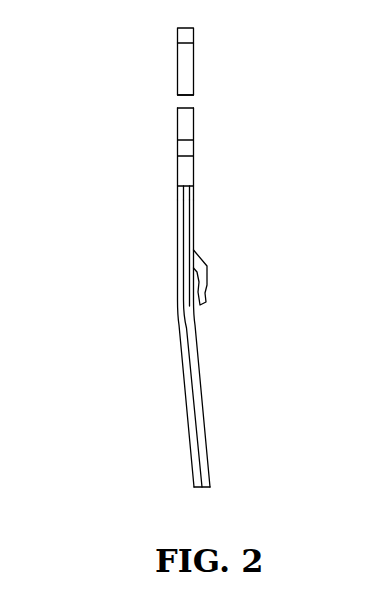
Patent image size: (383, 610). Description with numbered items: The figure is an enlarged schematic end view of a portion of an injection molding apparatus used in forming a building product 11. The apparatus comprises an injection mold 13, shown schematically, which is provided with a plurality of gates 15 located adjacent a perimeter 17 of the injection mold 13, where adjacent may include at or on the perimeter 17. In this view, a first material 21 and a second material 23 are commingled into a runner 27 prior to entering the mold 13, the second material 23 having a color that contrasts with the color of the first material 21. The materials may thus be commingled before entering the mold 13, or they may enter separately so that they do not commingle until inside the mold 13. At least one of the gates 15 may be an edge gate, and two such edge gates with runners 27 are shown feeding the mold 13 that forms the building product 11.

The building product 11 is at (174, 250).
The injection mold 13 is at (190, 335).
The gates 15 is at (177, 170).
The perimeter 17 is at (137, 202).
The first material 21 is at (121, 28).
The second material 23 is at (174, 27).
The runners 27 is at (177, 61).